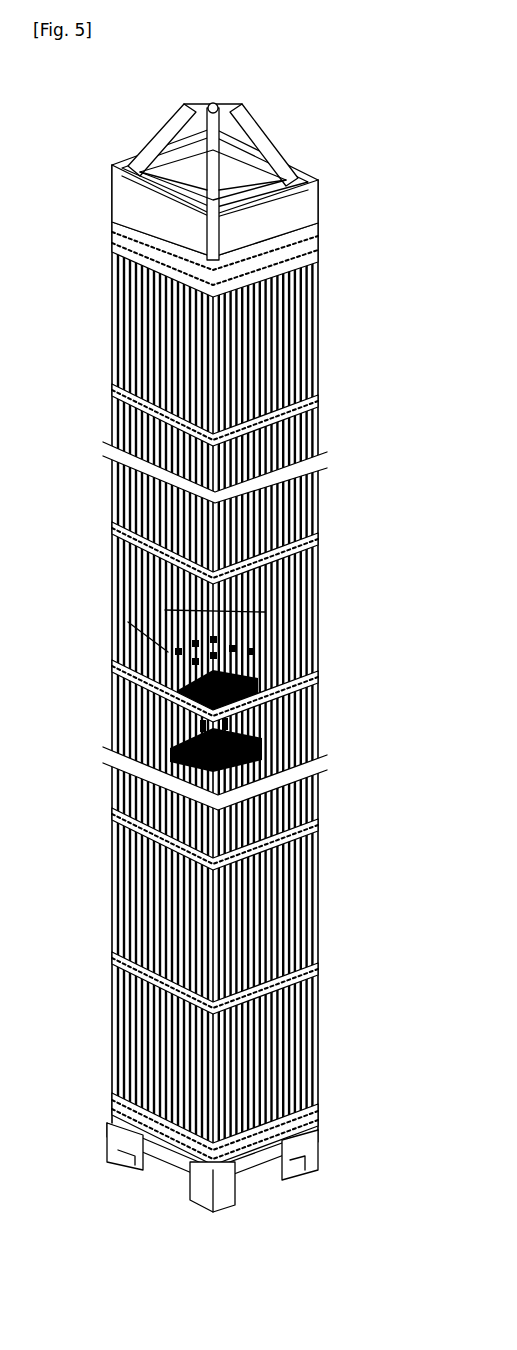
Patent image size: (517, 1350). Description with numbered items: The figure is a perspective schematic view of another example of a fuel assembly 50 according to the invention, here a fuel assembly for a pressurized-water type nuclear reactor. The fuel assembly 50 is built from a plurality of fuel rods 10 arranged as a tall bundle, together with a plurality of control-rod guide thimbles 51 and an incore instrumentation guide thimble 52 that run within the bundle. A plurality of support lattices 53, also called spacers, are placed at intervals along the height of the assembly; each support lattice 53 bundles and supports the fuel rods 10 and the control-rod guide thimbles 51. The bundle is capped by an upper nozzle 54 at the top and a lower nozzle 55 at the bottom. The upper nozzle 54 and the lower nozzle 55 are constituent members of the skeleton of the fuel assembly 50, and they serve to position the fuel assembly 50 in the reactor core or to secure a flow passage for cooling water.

The fuel assembly 50 is at (416, 65).
The fuel rods 10 is at (250, 666).
The control-rod guide thimbles 51 is at (183, 746).
The incore instrumentation guide thimble 52 is at (175, 660).
The support lattices 53 is at (253, 693).
The upper nozzle 54 is at (253, 181).
The lower nozzle 55 is at (245, 1167).